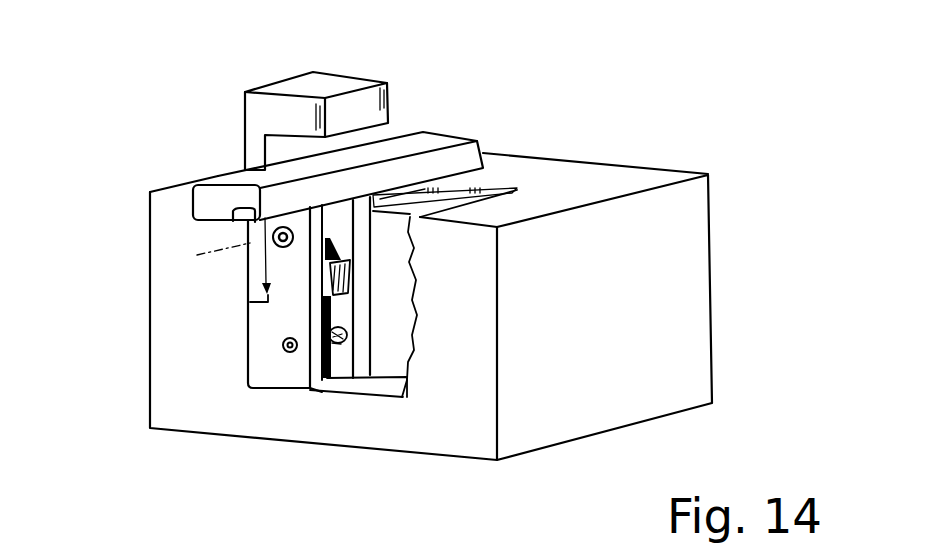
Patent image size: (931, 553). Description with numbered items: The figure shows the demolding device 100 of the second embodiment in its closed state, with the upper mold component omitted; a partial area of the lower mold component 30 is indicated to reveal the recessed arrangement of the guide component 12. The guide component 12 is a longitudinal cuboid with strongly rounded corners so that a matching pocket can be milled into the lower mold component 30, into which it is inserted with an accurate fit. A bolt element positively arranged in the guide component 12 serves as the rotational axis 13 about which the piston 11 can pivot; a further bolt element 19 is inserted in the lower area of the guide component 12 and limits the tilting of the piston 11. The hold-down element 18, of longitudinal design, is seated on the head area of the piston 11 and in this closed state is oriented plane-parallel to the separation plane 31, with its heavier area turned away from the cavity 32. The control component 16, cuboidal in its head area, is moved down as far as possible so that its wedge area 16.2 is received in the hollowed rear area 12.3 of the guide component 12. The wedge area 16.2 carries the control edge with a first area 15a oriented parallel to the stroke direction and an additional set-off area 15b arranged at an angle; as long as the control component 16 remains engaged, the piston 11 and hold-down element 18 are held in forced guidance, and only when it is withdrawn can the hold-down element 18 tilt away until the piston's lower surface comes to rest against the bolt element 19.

The bracket arrangement 100 is at (122, 83).
The control component 16 is at (260, 113).
The first area of control edge 15a is at (287, 148).
The set-off area 15b is at (268, 296).
The piston 11 is at (338, 235).
The hold-down element 18 is at (437, 146).
The cavity 32 is at (535, 157).
The separation plane 31 is at (580, 180).
The lower mold component 30 is at (655, 180).
The rotational axis 13 is at (272, 237).
The wedge area 16.2 is at (255, 260).
The rear area 12.3 is at (247, 313).
The guide component 12 is at (313, 378).
The bolt element 19 is at (337, 343).